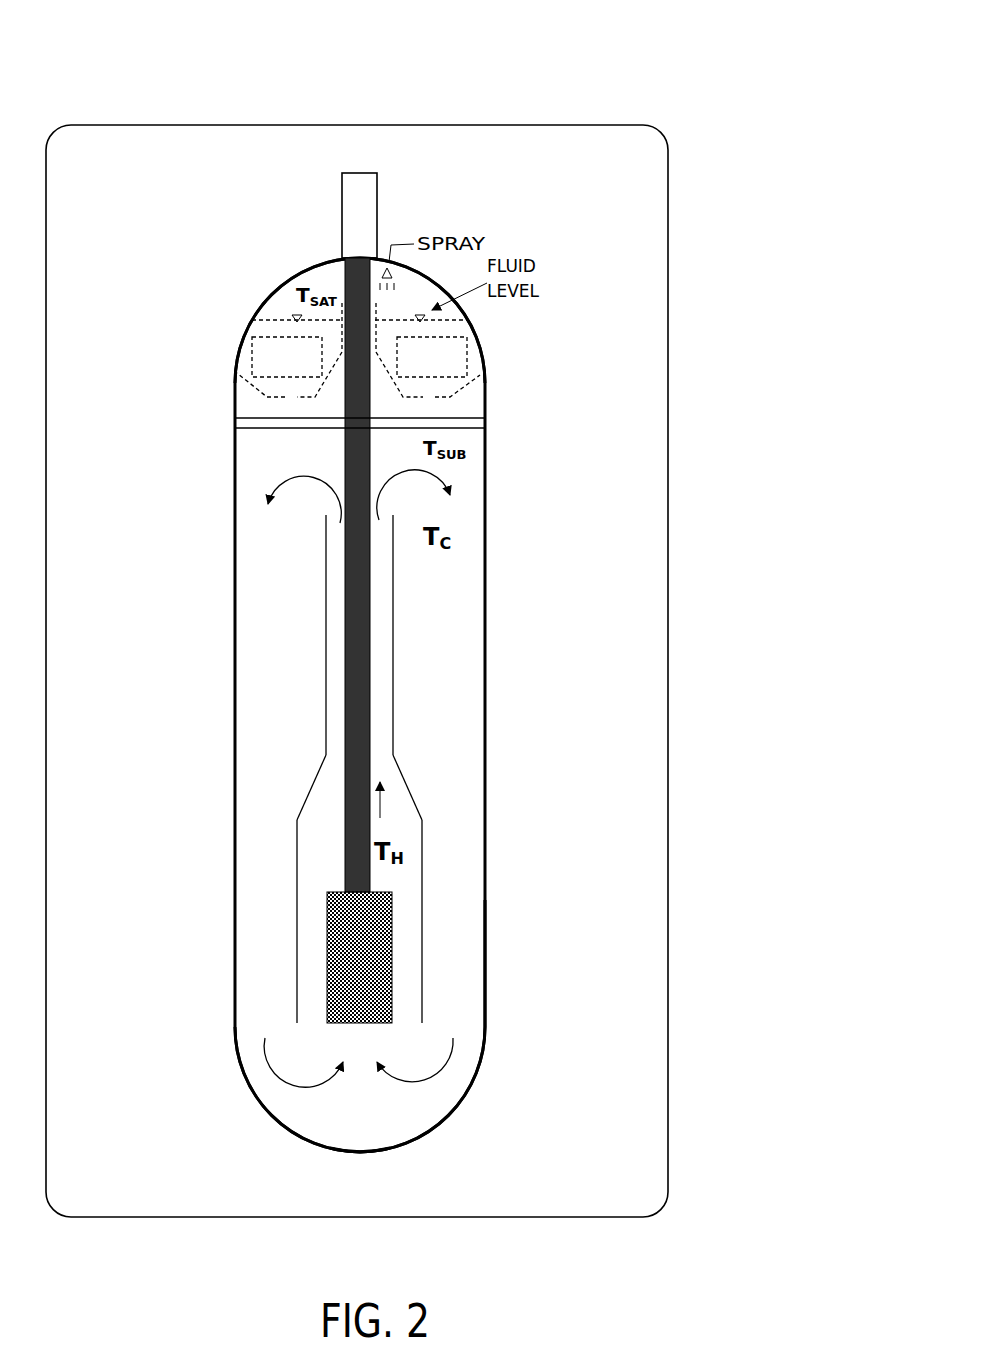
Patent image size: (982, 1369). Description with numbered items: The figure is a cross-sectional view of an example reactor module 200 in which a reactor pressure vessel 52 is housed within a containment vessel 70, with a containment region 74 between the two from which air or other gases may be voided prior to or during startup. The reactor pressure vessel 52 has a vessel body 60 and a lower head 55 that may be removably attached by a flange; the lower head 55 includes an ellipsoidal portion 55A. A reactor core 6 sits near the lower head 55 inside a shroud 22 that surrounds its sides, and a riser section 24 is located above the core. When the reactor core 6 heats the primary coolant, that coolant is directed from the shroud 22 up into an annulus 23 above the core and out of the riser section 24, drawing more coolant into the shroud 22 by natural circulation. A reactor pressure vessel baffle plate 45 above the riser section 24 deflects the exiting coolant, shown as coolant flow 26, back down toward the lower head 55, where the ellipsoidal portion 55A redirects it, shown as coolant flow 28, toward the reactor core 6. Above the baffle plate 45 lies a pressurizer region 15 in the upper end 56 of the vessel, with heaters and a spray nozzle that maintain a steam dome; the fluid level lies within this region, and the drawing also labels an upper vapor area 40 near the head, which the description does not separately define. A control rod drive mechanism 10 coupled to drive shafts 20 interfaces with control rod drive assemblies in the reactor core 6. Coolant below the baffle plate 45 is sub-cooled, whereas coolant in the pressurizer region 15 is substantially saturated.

The reactor module 200 is at (636, 72).
The containment vessel 70 is at (668, 625).
The containment region 74 is at (129, 612).
The vessel body 60 is at (485, 700).
The pressurizer region 15 is at (246, 284).
The upper vapor region 40 is at (580, 308).
The control rod drive mechanism 10 is at (342, 217).
The drive shaft 20 is at (345, 668).
The reactor core 6 is at (392, 945).
The riser section 24 is at (393, 612).
The annulus 23 is at (295, 776).
The shroud 22 is at (293, 968).
The reactor pressure vessel baffle plate 45 is at (406, 407).
The upper end 56 is at (483, 357).
The coolant flow 26 is at (424, 496).
The coolant flow 28 is at (268, 1060).
The reactor pressure vessel 52 is at (485, 977).
The lower head 55 is at (280, 1123).
The ellipsoidal portion 55A is at (398, 1143).